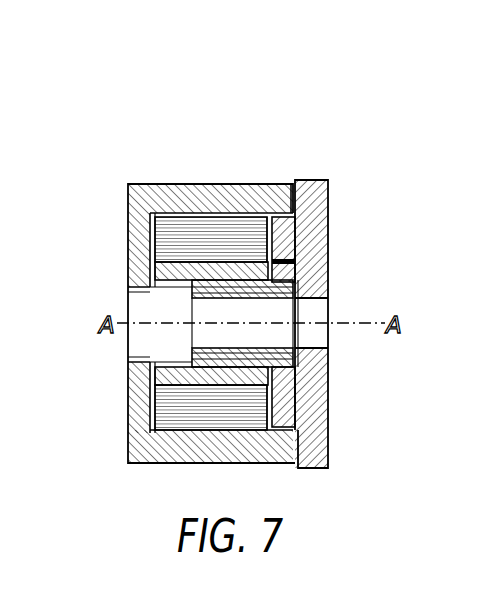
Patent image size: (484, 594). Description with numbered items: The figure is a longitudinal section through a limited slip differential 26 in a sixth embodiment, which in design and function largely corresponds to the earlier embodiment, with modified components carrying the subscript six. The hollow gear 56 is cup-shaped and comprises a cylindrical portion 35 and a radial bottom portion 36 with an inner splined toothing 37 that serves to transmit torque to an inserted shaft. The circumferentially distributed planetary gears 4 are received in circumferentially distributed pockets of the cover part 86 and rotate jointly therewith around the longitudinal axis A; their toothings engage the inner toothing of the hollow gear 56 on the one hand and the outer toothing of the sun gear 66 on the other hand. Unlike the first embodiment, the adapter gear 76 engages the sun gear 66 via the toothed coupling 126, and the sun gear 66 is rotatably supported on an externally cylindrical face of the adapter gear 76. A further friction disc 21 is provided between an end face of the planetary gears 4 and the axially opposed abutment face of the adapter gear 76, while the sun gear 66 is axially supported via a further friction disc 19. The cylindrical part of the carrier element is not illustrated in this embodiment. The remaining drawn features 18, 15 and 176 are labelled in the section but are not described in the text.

The limited slip differential 26 is at (182, 126).
The cylindrical portion 35 is at (171, 185).
The hollow gear 56 is at (215, 184).
The planetary gears 4 is at (243, 212).
The end face 18 is at (292, 183).
The further friction disc 19 is at (157, 376).
The inner splined toothing 37 is at (144, 364).
The further friction disc 21 is at (152, 232).
The radial bottom portion 36 is at (138, 238).
The rotor hub 15 is at (256, 302).
The sun gear 66 is at (160, 299).
The adapter gear 76 is at (272, 343).
The toothed coupling 126 is at (302, 249).
The cover part 86 is at (324, 188).
The flange step 176 is at (316, 383).